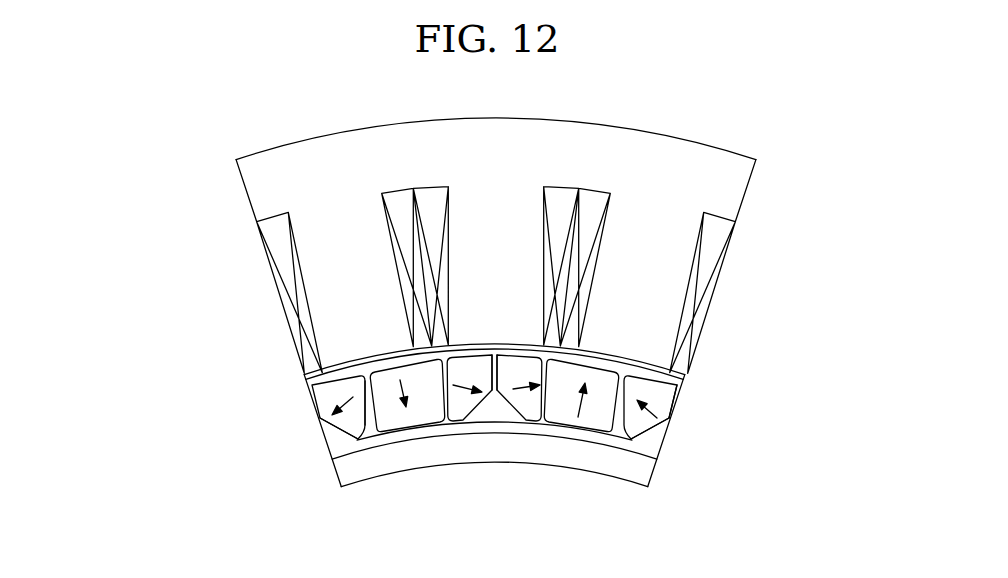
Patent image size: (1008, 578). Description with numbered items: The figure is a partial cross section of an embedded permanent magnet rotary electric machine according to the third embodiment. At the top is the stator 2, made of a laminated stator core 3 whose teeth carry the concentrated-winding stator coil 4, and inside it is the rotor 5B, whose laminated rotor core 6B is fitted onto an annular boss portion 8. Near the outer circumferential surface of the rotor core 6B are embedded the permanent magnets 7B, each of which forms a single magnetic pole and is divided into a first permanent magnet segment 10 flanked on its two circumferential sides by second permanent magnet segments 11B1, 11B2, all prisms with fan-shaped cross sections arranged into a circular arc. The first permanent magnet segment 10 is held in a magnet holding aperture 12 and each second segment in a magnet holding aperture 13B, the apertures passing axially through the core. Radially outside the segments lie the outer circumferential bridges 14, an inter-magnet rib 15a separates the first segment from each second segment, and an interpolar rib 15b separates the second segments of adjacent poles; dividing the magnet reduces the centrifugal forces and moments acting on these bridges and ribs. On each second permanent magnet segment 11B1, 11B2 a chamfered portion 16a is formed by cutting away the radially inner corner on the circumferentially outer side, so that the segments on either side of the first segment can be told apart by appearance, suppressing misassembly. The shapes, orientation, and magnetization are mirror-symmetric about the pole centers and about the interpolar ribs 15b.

The stator 2 is at (812, 165).
The stator core 3 is at (746, 181).
The stator coil 4 is at (727, 233).
The rotor 5B is at (680, 426).
The rotor core 6B is at (330, 441).
The permanent magnet 7B is at (482, 492).
The boss portion 8 is at (342, 470).
The first permanent magnet segment 10 is at (410, 418).
The second permanent magnet segment 11B1 is at (633, 434).
The second permanent magnet segment 11B2 is at (362, 428).
The magnet holding aperture 12 is at (378, 388).
The magnet holding aperture 13B is at (327, 406).
The outer circumferential bridge 14 is at (668, 379).
The inter-magnet rib 15a is at (680, 390).
The interpolar rib 15b is at (495, 427).
The chamfered portion 16a is at (656, 434).